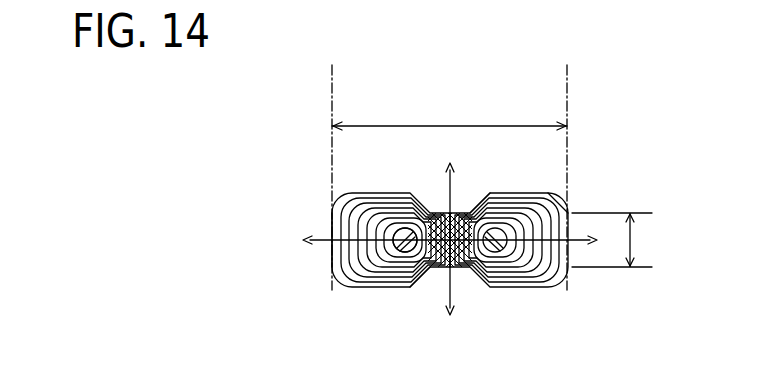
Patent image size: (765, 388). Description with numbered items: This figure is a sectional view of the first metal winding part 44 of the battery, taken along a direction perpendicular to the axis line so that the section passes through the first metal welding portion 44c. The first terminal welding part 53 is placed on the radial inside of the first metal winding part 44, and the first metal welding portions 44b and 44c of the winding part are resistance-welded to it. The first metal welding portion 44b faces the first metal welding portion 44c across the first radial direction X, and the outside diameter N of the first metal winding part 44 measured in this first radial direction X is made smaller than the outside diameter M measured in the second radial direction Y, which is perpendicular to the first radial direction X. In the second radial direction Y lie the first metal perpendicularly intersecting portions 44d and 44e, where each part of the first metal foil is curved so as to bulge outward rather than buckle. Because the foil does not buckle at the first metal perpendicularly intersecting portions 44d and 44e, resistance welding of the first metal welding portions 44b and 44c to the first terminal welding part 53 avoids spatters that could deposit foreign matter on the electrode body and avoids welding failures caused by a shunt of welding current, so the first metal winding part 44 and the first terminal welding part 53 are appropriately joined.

The first metal winding part 44 is at (535, 284).
The first metal welding portion 44b is at (462, 277).
The first metal welding portion 44c is at (463, 208).
The first metal perpendicularly intersecting portion 44d is at (323, 250).
The first metal perpendicularly intersecting portion 44e is at (540, 193).
The first terminal welding part 53 is at (400, 287).
The first radial direction X is at (447, 178).
The second radial direction Y is at (328, 237).
The outside diameter M is at (449, 112).
The outside diameter N is at (614, 240).